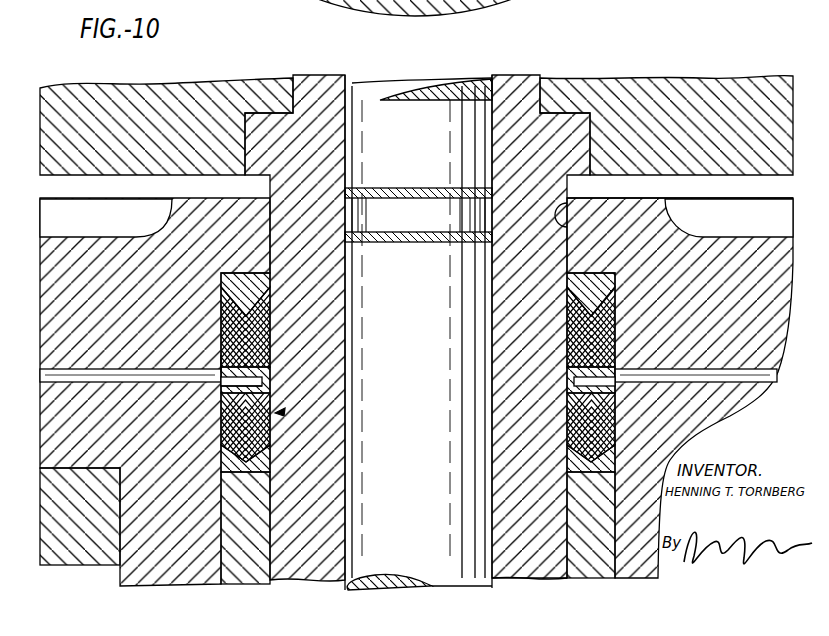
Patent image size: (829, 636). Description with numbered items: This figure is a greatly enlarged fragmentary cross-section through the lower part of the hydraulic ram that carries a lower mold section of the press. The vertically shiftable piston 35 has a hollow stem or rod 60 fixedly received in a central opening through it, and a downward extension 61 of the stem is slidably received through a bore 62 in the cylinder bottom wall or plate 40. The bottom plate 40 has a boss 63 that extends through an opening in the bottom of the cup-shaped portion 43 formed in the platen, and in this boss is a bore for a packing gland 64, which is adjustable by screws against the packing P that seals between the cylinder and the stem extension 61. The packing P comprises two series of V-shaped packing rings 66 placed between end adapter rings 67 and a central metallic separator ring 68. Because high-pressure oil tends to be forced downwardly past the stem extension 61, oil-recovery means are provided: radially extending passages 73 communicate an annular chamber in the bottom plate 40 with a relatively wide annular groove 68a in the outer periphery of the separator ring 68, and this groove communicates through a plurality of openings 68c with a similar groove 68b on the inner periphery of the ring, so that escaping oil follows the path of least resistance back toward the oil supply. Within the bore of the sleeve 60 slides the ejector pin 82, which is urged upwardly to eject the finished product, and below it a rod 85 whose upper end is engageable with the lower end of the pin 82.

The piston 35 is at (688, 90).
The bottom wall 40 is at (467, 13).
The cup-shaped portion 43 is at (62, 557).
The hollow stem 60 is at (527, 81).
The downward extension 61 is at (500, 567).
The bore 62 is at (568, 206).
The boss 63 is at (128, 578).
The packing gland 64 is at (260, 576).
The V-shaped packing rings 66 is at (262, 343).
The end adapter rings 67 is at (262, 284).
The central metallic separator ring 68 is at (263, 382).
The annular groove 68a is at (220, 372).
The groove 68b is at (263, 372).
The openings 68c is at (218, 398).
The radially extending passages 73 is at (112, 372).
The pin 82 is at (380, 100).
The rod 85 is at (390, 250).
The packing P is at (280, 412).